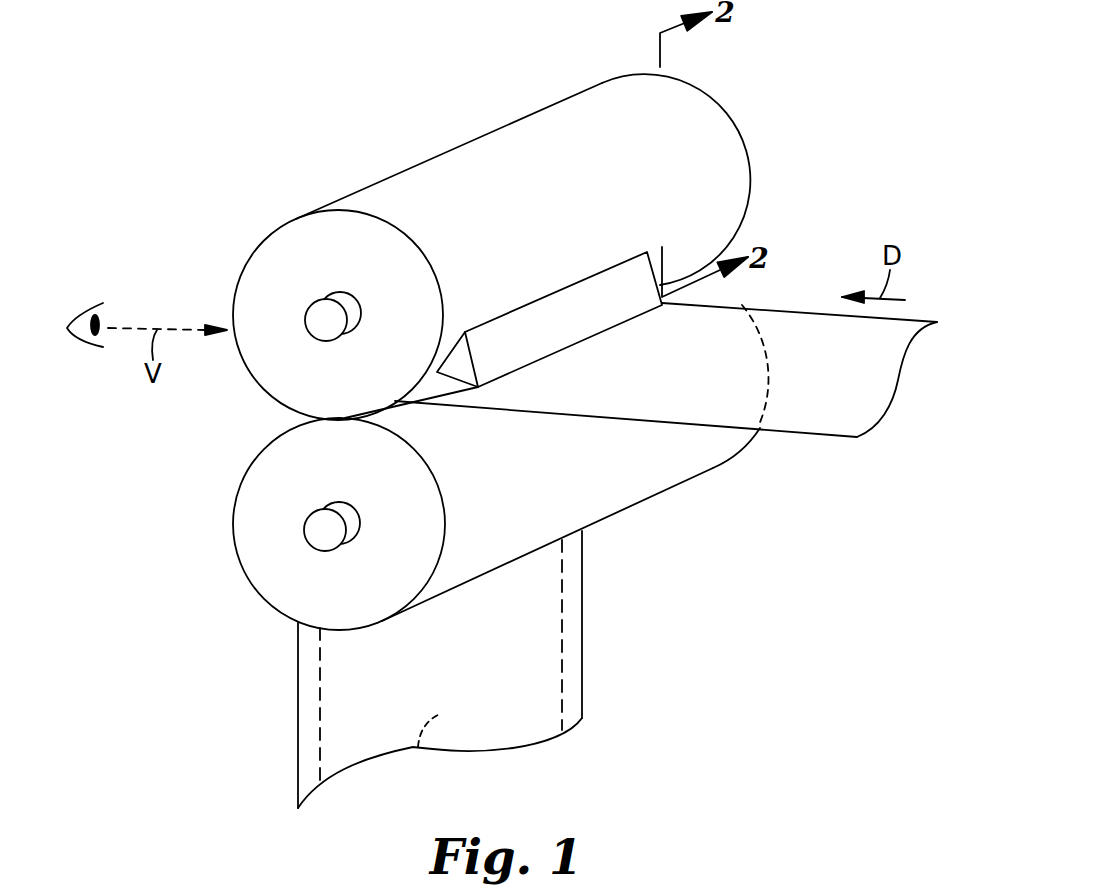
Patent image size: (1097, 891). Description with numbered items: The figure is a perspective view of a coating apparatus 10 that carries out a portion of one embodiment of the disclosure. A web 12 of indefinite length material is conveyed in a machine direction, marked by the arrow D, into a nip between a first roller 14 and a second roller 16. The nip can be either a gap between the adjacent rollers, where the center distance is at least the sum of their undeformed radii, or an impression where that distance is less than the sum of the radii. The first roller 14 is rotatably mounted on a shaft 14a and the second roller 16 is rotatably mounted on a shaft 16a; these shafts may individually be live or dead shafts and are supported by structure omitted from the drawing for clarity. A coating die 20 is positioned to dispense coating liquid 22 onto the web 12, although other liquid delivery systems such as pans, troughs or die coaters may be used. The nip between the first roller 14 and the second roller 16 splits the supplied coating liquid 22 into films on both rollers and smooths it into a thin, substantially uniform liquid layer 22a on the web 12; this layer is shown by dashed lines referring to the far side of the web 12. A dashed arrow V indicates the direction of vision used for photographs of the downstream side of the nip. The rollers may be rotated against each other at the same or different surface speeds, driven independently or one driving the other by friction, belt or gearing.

The coating apparatus 10 is at (373, 85).
The web 12 is at (828, 414).
The first roller 14 is at (466, 528).
The shaft 14a is at (327, 533).
The second roller 16 is at (491, 247).
The shaft 16a is at (326, 315).
The coating die 20 is at (620, 264).
The coating liquid 22 is at (437, 375).
The liquid layer 22a is at (418, 747).